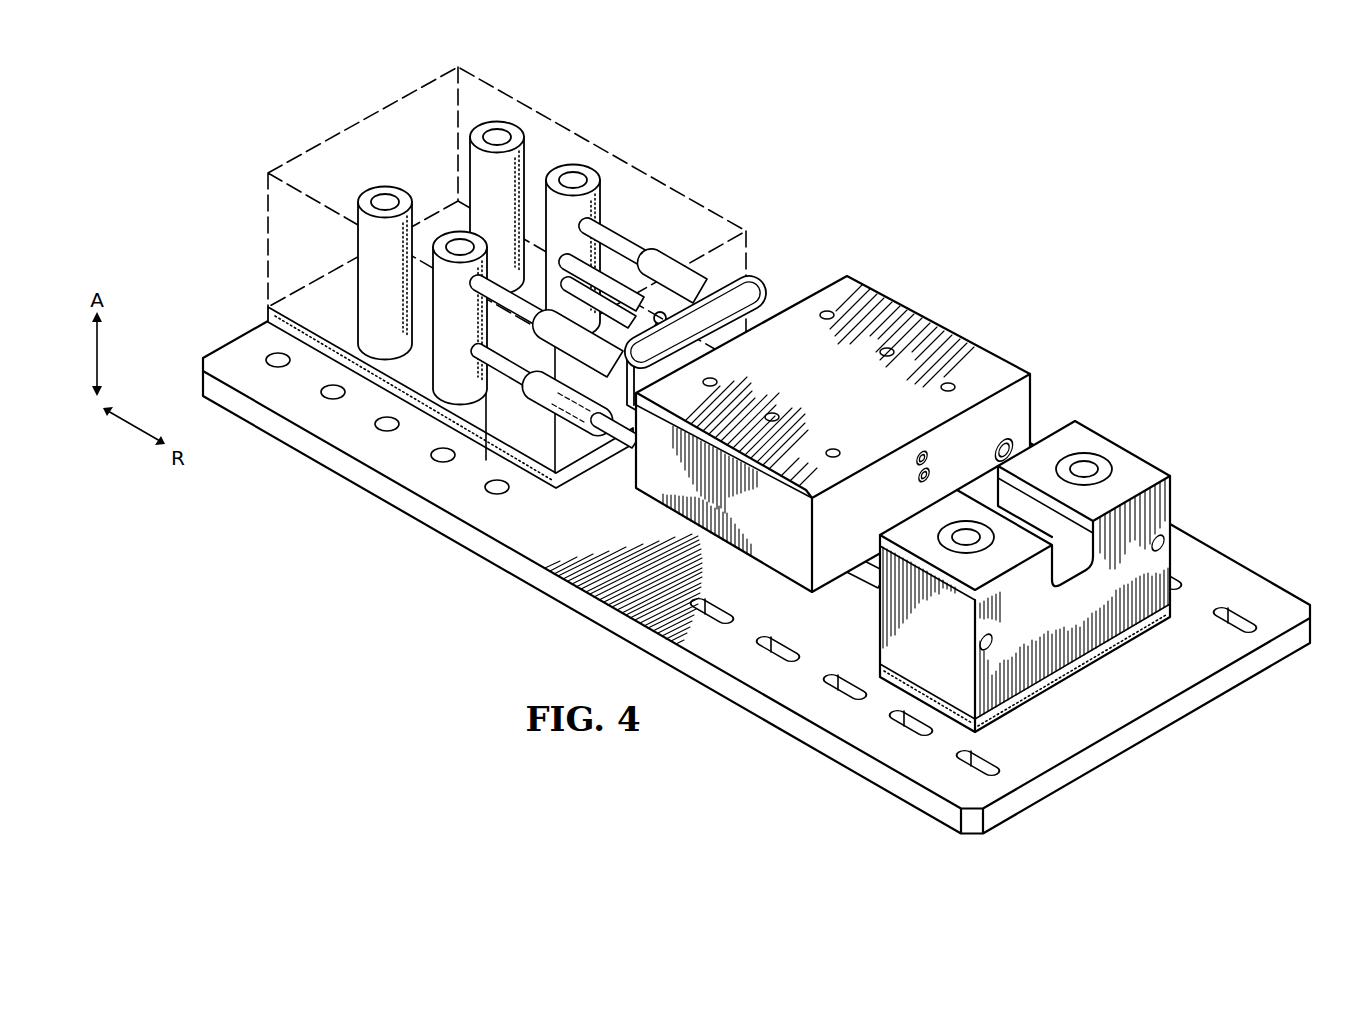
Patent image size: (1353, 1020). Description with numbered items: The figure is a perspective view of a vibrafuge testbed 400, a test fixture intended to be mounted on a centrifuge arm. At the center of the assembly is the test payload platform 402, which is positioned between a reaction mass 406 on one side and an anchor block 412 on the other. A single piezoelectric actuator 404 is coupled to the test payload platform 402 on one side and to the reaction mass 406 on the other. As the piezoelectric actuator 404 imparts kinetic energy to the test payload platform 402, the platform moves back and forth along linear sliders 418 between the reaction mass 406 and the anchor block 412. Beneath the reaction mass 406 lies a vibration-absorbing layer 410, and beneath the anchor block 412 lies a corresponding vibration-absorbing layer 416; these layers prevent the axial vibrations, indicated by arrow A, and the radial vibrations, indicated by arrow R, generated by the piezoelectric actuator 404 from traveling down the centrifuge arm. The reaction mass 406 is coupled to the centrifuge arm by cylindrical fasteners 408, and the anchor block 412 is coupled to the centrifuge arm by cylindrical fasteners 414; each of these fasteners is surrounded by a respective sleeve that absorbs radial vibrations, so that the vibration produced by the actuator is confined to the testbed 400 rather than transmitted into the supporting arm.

The testbed 400 is at (750, 434).
The test payload platform 402 is at (976, 354).
The piezoelectric actuator 404 is at (757, 296).
The reaction mass 406 is at (264, 235).
The cylindrical fasteners 408 is at (496, 133).
The vibration-absorbing layer 410 is at (388, 383).
The anchor block 412 is at (1055, 582).
The cylindrical fasteners 414 is at (1090, 456).
The vibration-absorbing layer 416 is at (1078, 663).
The linear sliders 418 is at (620, 475).